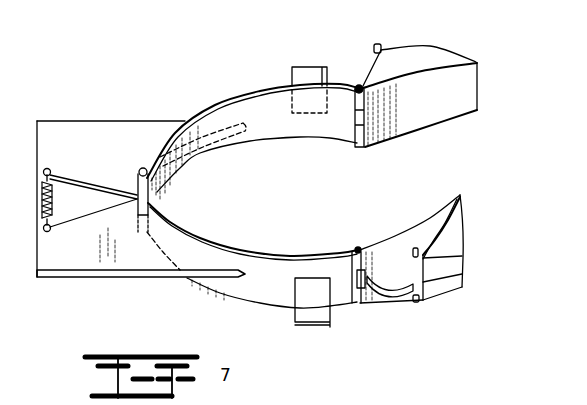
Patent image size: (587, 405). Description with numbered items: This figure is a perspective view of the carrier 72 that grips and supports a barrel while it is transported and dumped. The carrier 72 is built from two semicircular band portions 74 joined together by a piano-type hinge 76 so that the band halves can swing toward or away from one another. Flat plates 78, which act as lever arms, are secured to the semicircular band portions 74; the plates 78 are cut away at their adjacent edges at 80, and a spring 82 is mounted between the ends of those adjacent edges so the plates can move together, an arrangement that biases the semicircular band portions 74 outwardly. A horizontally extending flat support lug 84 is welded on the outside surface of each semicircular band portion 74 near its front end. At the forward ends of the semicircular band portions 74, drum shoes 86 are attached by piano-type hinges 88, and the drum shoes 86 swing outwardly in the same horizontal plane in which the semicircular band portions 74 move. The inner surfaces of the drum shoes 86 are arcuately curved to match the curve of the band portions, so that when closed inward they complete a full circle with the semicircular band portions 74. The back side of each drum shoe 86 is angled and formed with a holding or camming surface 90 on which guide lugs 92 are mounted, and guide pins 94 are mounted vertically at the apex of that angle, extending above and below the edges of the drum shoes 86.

The carrier 72 is at (236, 95).
The semicircular band portions 74 is at (265, 134).
The piano-type hinge 76 is at (143, 170).
The flat plates 78 is at (95, 135).
The cut away 80 is at (85, 186).
The spring 82 is at (54, 182).
The flat support lug 84 is at (292, 68).
The drum shoes 86 is at (478, 106).
The piano-type hinges 88 is at (359, 86).
The camming surface 90 is at (365, 84).
The guide lugs 92 is at (387, 280).
The guide pins 94 is at (381, 45).